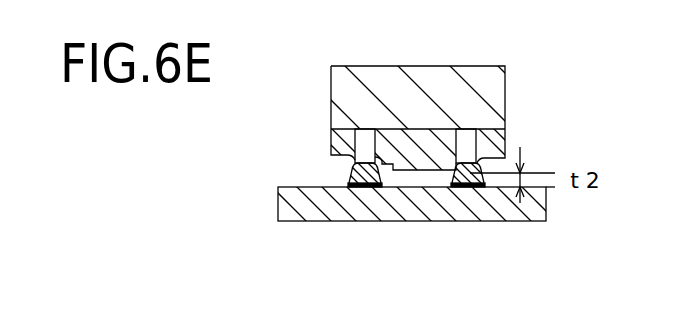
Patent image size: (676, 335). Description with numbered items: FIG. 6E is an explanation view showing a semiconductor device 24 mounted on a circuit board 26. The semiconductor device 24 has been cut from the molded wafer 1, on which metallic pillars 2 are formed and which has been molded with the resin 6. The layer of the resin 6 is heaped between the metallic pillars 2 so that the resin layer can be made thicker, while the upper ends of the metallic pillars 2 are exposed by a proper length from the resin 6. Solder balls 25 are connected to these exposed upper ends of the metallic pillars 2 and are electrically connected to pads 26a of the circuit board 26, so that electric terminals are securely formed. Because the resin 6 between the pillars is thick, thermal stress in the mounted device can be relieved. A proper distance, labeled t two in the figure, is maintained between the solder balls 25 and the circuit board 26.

The wafer 1 is at (428, 85).
The metallic pillars 2 is at (350, 170).
The resin 6 is at (418, 163).
The semiconductor device 24 is at (527, 101).
The solder balls 25 is at (354, 179).
The circuit board 26 is at (307, 205).
The pads 26a is at (357, 184).